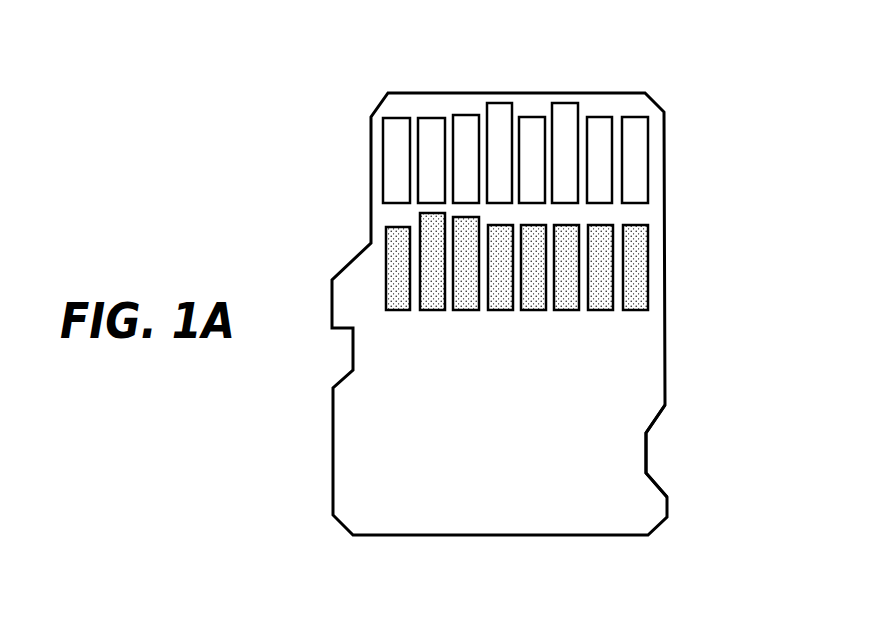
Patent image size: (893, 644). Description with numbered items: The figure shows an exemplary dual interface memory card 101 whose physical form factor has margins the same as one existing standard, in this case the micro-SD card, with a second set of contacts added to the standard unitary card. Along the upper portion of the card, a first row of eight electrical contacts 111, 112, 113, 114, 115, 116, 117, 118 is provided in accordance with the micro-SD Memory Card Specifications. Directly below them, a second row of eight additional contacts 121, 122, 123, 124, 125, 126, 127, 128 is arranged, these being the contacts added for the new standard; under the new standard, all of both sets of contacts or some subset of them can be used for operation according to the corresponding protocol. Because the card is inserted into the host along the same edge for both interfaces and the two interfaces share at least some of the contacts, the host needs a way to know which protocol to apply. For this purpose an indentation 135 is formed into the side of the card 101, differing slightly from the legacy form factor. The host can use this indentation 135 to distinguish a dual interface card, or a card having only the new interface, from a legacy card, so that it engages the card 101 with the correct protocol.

The memory card 101 is at (530, 535).
The electrical contact 111 is at (390, 118).
The electrical contact 112 is at (422, 118).
The electrical contact 113 is at (466, 115).
The electrical contact 114 is at (500, 103).
The electrical contact 115 is at (532, 117).
The electrical contact 116 is at (560, 103).
The electrical contact 117 is at (600, 117).
The electrical contact 118 is at (632, 117).
The additional contact 121 is at (386, 272).
The additional contact 122 is at (427, 311).
The additional contact 123 is at (467, 311).
The additional contact 124 is at (500, 311).
The additional contact 125 is at (532, 311).
The additional contact 126 is at (567, 311).
The additional contact 127 is at (604, 311).
The additional contact 128 is at (648, 271).
The indentation 135 is at (657, 449).